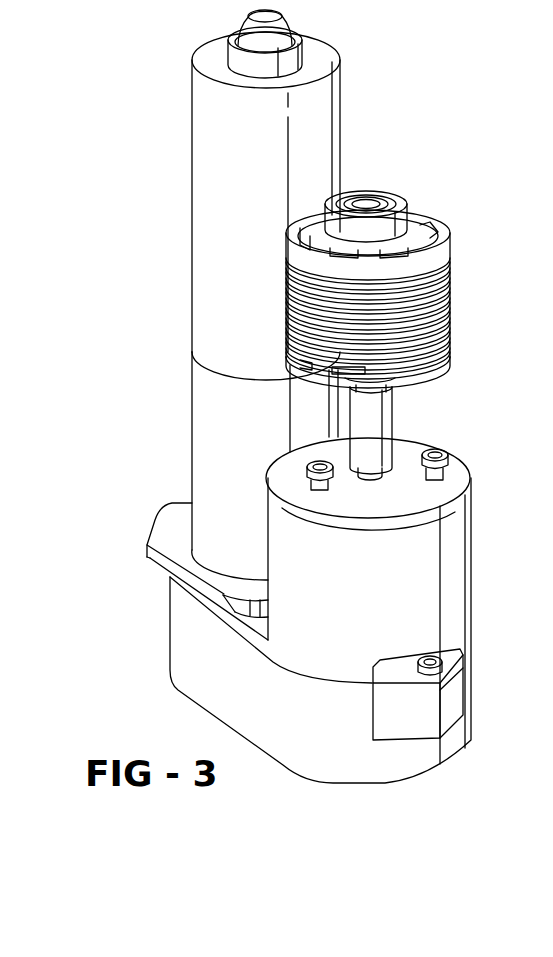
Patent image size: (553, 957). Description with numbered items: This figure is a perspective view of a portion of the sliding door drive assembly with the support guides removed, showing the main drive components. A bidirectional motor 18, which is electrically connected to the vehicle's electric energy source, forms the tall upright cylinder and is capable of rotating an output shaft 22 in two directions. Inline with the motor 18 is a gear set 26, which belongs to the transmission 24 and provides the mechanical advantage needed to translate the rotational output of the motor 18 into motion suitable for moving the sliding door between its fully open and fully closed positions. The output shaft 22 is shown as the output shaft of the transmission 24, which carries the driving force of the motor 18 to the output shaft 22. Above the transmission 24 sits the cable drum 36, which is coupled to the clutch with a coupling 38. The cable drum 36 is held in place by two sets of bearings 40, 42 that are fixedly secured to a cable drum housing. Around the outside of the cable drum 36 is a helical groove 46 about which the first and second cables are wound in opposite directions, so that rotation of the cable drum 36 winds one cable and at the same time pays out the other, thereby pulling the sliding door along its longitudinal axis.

The motor 18 is at (205, 190).
The gear set 26 is at (207, 405).
The cable drum 36 is at (423, 218).
The bearings 42 is at (363, 194).
The helical groove 46 is at (452, 280).
The bearings 40 is at (445, 373).
The coupling 38 is at (405, 408).
The output shaft 22 is at (372, 480).
The transmission 24 is at (482, 682).